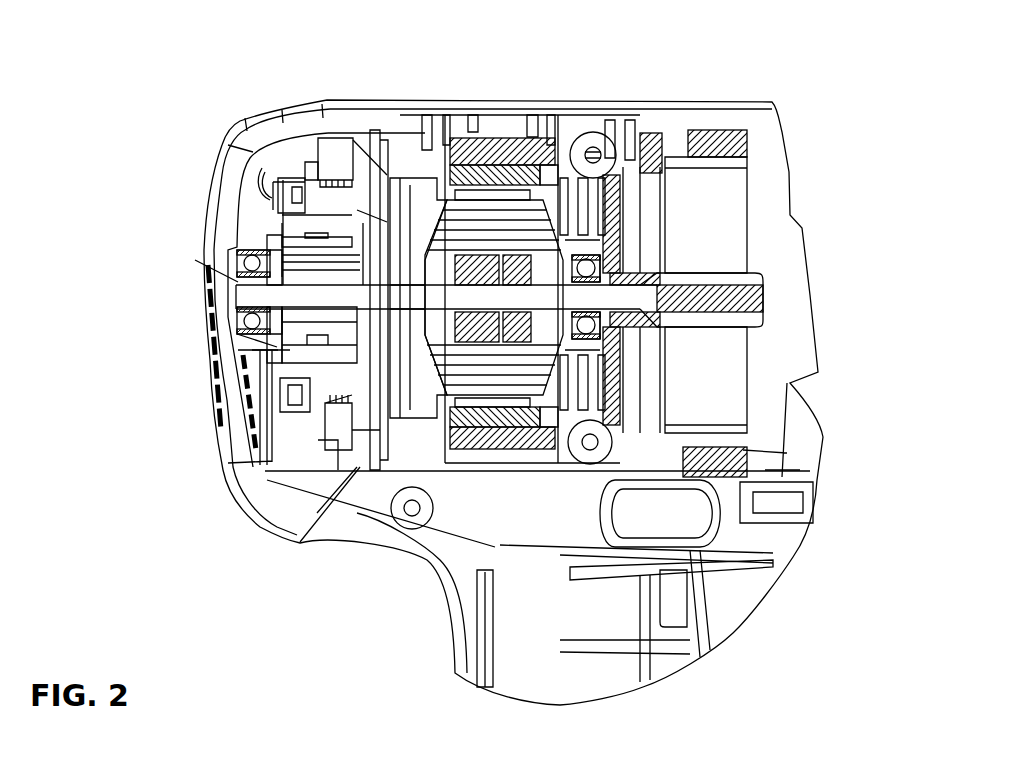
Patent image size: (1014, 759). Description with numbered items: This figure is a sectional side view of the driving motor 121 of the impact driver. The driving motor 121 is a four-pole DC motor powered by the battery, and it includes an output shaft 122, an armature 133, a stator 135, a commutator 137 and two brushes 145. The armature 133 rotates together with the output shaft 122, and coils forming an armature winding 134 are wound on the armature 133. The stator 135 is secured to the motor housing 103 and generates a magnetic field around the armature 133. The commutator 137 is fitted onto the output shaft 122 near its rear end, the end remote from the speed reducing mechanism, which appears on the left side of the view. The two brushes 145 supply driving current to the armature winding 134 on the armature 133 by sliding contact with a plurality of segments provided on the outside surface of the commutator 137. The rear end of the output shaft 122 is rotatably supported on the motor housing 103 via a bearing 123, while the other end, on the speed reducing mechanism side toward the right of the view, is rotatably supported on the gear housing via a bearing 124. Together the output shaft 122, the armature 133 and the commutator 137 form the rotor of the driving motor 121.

The motor housing 103 is at (732, 97).
The driving motor 121 is at (425, 475).
The output shaft 122 is at (497, 287).
The bearing 123 is at (240, 262).
The bearing 124 is at (593, 232).
The armature 133 is at (485, 200).
The armature winding 134 is at (417, 225).
The stator 135 is at (463, 143).
The commutator 137 is at (277, 352).
The brushes 145 is at (318, 235).